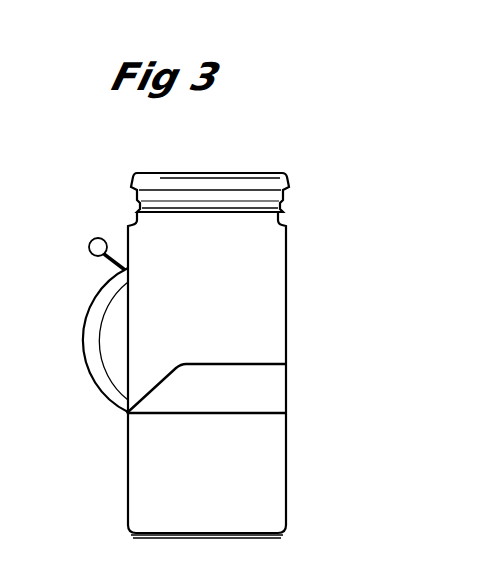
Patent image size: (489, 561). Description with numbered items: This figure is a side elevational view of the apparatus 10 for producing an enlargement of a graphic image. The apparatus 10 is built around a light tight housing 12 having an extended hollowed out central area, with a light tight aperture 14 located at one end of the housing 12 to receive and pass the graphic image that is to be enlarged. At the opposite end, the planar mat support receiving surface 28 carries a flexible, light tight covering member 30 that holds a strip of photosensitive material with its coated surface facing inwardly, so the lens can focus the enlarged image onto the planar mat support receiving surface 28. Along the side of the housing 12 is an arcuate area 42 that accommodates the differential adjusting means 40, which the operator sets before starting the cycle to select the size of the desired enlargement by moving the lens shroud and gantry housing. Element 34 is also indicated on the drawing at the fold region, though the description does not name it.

The apparatus for producing an enlargement of a graphic image 10 is at (312, 333).
The light tight housing 12 is at (287, 380).
The light tight aperture 14 is at (125, 497).
The planar mat support receiving surface 28 is at (281, 173).
The flexible, light tight covering member 30 is at (148, 172).
The fold junction 34 is at (128, 412).
The differential adjusting means 40 is at (96, 238).
The arcuate area 42 is at (89, 314).